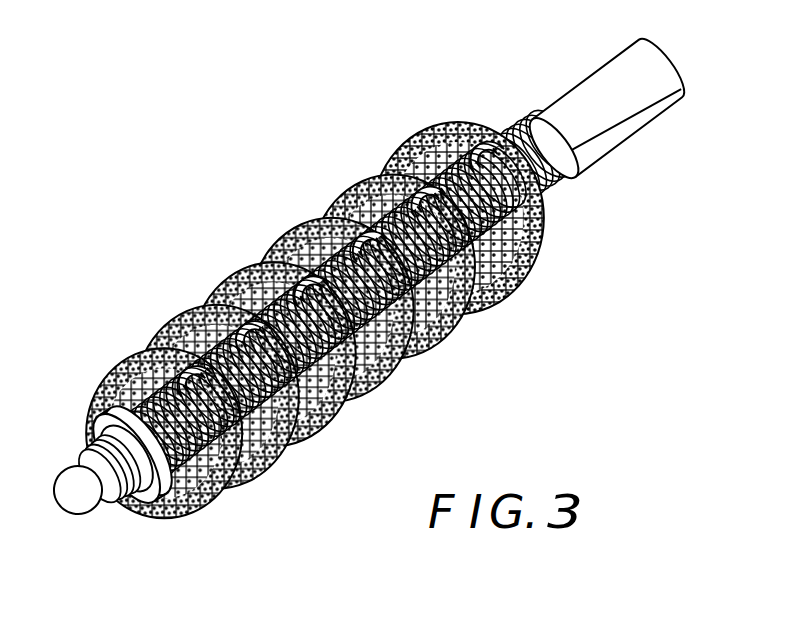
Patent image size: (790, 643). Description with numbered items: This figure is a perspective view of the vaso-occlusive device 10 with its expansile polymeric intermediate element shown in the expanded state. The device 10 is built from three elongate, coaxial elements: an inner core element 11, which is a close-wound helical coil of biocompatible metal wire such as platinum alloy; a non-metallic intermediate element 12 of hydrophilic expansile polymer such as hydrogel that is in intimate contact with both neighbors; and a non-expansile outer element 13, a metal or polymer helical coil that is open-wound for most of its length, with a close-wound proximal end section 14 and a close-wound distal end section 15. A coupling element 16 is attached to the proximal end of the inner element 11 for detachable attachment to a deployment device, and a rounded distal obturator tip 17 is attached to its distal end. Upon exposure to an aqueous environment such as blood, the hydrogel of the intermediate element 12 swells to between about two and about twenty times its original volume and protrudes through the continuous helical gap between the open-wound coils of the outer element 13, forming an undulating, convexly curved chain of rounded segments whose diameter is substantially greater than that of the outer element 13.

The vaso-occlusive device 10 is at (348, 302).
The inner core element 11 is at (359, 305).
The intermediate element 12 is at (108, 350).
The outer element 13 is at (283, 448).
The proximal end section 14 is at (562, 190).
The distal end section 15 is at (124, 511).
The coupling element 16 is at (575, 86).
The distal obturator tip 17 is at (77, 519).